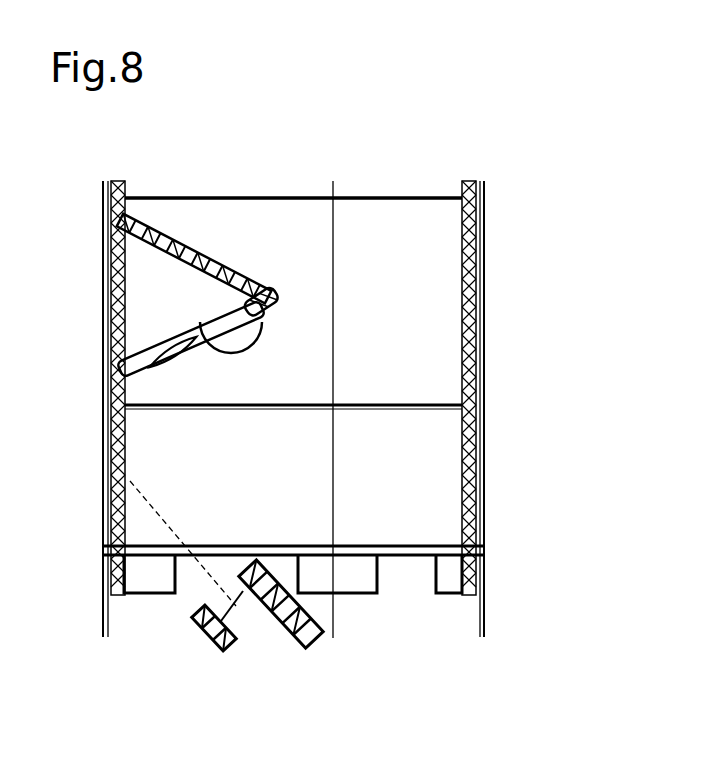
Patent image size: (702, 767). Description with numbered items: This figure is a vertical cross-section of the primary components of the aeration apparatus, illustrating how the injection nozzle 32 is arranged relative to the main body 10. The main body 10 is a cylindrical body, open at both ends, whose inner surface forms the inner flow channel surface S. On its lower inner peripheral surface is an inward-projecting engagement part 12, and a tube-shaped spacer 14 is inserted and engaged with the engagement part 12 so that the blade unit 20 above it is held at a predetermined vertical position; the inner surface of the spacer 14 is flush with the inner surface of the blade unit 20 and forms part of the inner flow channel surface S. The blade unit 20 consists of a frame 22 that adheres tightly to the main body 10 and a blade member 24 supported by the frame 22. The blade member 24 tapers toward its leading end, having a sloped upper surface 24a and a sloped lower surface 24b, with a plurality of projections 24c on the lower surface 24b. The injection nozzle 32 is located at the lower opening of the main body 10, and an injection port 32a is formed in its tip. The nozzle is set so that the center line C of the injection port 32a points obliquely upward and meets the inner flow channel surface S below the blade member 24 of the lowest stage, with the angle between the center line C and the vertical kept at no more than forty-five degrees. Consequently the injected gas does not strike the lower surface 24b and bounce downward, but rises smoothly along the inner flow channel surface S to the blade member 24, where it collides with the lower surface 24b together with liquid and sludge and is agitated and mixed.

The main body 10 is at (488, 383).
The engagement part 12 is at (360, 578).
The spacer 14 is at (460, 490).
The blade unit 20 is at (420, 193).
The frame 22 is at (462, 262).
The blade member 24 is at (252, 301).
The upper surface 24a is at (222, 253).
The lower surface 24b is at (266, 318).
The projections 24c is at (196, 368).
The injection nozzle 32 is at (284, 645).
The injection port 32a is at (206, 607).
The inner flow channel surface S is at (128, 422).
The center line C is at (175, 540).